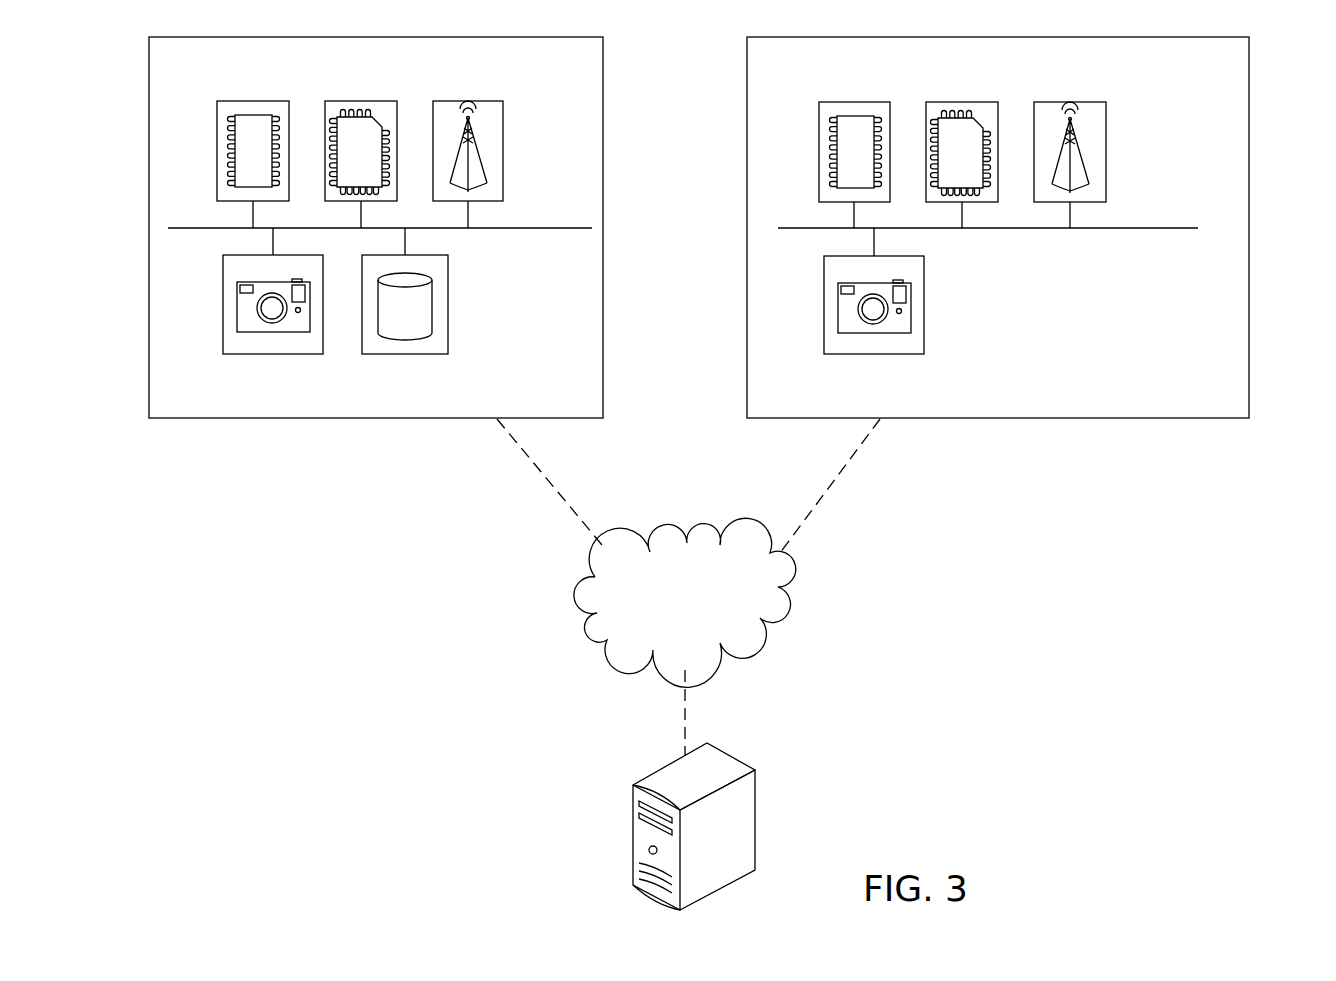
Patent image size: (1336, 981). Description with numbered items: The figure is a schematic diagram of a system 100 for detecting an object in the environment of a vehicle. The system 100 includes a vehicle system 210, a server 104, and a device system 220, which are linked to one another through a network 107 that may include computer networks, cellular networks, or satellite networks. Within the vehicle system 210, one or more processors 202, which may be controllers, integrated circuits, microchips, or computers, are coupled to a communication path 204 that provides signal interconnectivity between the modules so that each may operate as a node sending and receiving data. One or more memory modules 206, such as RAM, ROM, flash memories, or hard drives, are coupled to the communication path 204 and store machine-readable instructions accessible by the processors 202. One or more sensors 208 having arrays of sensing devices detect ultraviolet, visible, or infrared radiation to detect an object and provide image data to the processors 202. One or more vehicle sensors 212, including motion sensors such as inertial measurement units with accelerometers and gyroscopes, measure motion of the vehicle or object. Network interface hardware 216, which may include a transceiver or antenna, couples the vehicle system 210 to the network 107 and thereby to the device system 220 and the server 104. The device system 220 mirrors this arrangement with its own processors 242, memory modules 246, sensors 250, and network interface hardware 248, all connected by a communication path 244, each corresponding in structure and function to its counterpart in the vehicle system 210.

The system 100 is at (305, 665).
The server 104 is at (755, 790).
The network 107 is at (800, 595).
The processors 202 is at (255, 101).
The communication path 204 is at (540, 228).
The memory modules 206 is at (360, 101).
The sensors 208 is at (273, 354).
The vehicle system 210 is at (603, 230).
The vehicle sensors 212 is at (405, 354).
The network interface hardware 216 is at (468, 101).
The device system 220 is at (1249, 230).
The processors 242 is at (856, 102).
The communication path 244 is at (1143, 228).
The memory modules 246 is at (961, 102).
The network interface hardware 248 is at (1070, 102).
The sensors 250 is at (874, 354).